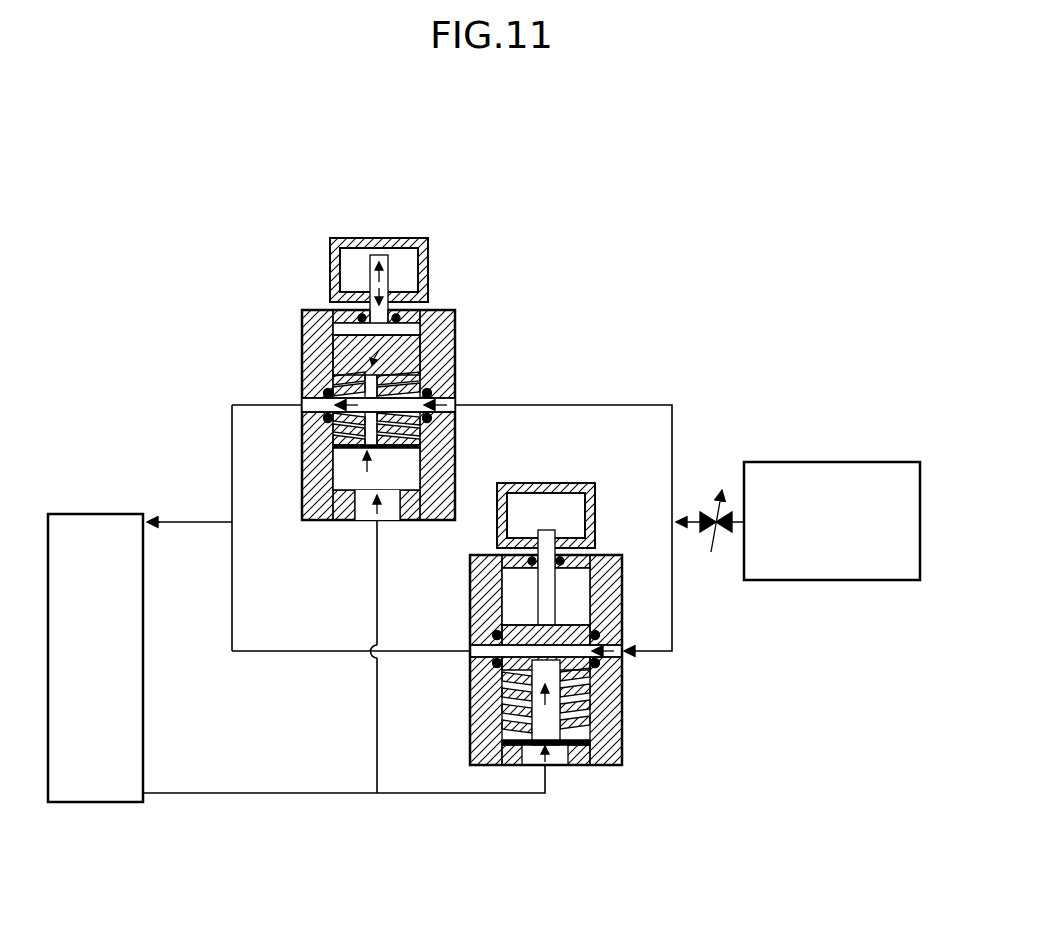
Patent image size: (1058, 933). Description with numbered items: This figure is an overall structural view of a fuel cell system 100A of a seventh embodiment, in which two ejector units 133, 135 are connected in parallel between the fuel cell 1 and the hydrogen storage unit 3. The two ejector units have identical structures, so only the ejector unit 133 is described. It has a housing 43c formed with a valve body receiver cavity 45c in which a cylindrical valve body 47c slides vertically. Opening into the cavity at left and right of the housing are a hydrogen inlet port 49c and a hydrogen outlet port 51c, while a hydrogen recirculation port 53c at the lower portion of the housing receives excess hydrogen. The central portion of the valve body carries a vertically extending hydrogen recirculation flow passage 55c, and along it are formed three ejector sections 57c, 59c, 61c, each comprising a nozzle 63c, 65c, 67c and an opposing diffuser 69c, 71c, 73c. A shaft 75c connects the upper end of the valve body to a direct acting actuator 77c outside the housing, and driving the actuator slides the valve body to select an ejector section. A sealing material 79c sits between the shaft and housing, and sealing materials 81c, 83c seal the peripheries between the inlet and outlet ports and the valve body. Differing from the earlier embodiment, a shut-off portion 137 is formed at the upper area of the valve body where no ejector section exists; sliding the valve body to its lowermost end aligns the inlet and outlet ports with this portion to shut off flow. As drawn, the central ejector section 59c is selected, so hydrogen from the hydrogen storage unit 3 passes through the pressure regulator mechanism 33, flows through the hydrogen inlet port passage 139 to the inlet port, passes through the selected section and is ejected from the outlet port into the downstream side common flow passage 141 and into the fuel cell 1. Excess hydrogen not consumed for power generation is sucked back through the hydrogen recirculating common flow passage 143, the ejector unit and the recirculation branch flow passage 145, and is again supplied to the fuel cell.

The fuel supply system 100A is at (656, 226).
The fuel cell 1 is at (103, 513).
The hydrogen storage unit 3 is at (788, 462).
The pressure regulator mechanism 33 is at (706, 510).
The ejector unit 133 is at (494, 272).
The ejector unit 135 is at (608, 546).
The shut-off portion 137 is at (302, 347).
The hydrogen inlet port passage 139 is at (621, 405).
The downstream side common flow passage 141 is at (180, 522).
The hydrogen recirculating common flow passage 143 is at (228, 793).
The recirculation branch flow passage 145 is at (377, 728).
The housing 43c is at (432, 522).
The valve body receiver cavity 45c is at (398, 522).
The valve body 47c is at (432, 345).
The hydrogen inlet port 49c is at (457, 408).
The hydrogen outlet port 51c is at (300, 407).
The hydrogen recirculation port 53c is at (375, 522).
The hydrogen recirculation flow passage 55c is at (330, 518).
The ejector section 57c is at (412, 322).
The ejector section 59c is at (420, 388).
The ejector section 61c is at (360, 522).
The nozzle 63c is at (426, 366).
The nozzle 65c is at (426, 400).
The nozzle 67c is at (455, 456).
The diffuser 69c is at (304, 386).
The diffuser 71c is at (320, 400).
The diffuser 73c is at (305, 466).
The shaft 75c is at (392, 238).
The direct acting actuator 77c is at (330, 266).
The sealing material 79c is at (335, 326).
The sealing material 81c is at (452, 424).
The sealing material 83c is at (325, 420).